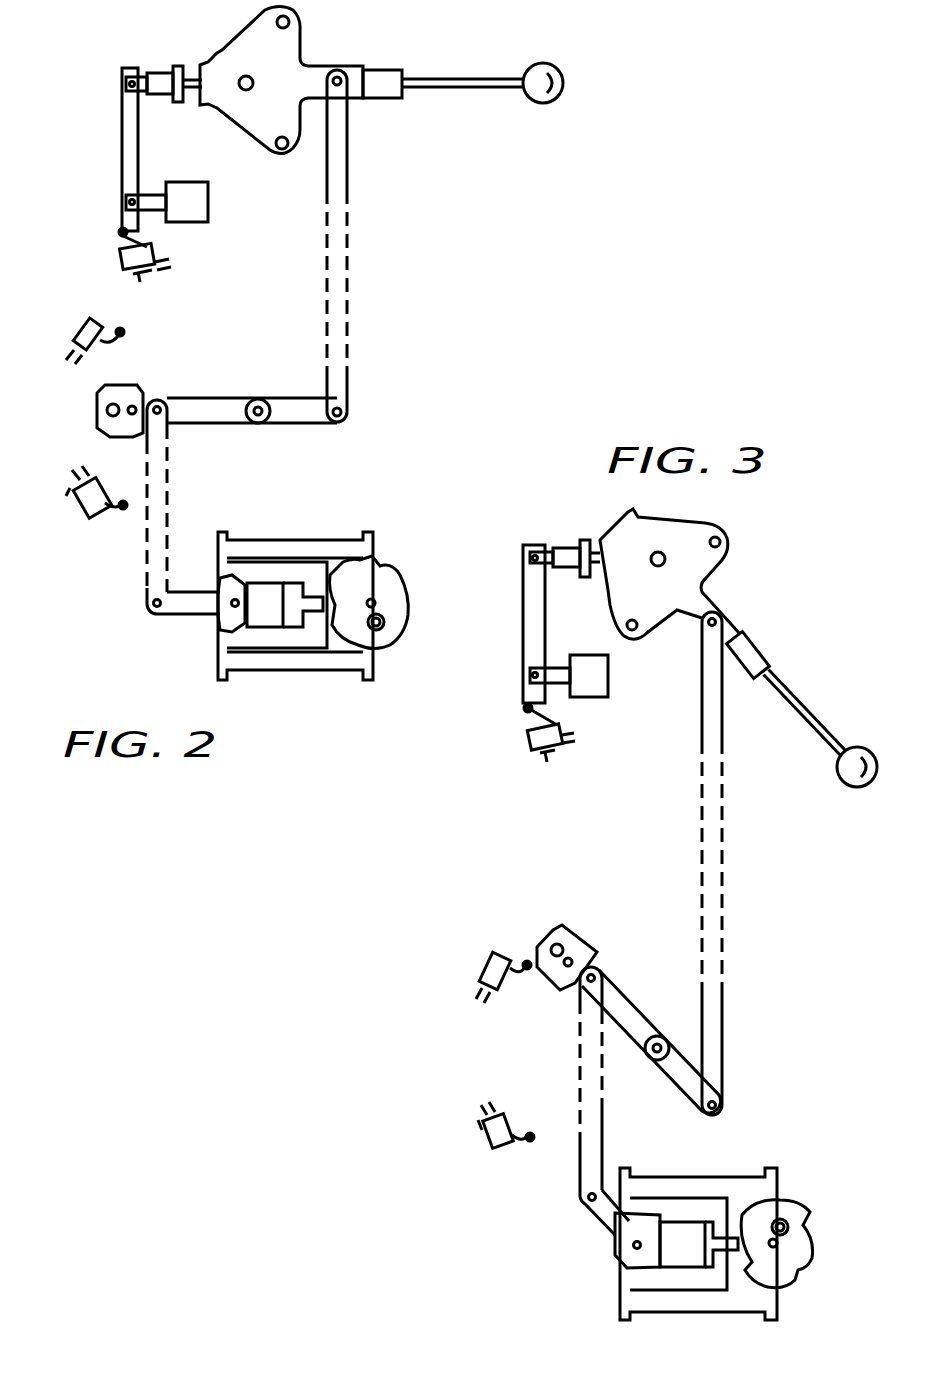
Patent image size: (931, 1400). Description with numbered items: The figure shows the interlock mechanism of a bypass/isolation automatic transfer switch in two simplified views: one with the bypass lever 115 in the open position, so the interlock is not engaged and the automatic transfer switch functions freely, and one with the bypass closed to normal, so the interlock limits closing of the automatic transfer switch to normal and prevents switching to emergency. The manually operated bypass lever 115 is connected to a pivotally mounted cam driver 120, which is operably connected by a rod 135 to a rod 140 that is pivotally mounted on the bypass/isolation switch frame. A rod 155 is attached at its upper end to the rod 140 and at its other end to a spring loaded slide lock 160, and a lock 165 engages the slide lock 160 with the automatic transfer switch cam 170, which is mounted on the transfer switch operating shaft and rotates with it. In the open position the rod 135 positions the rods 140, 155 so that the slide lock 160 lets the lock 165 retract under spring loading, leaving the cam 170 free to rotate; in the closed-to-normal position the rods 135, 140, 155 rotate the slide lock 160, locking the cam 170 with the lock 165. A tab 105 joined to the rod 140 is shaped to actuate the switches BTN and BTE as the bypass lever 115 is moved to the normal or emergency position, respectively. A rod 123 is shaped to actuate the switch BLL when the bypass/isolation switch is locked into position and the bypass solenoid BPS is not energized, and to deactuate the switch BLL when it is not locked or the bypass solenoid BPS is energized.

In FIG. 2, the tab 105 is at (100, 397).
In FIG. 3, the tab 105 is at (570, 933).
In FIG. 2, the bypass lever 115 is at (565, 32).
In FIG. 3, the bypass lever 115 is at (839, 774).
In FIG. 2, the cam driver 120 is at (222, 50).
In FIG. 3, the cam driver 120 is at (680, 533).
In FIG. 2, the rod 123 is at (122, 112).
In FIG. 3, the rod 123 is at (545, 594).
In FIG. 2, the rod 135 is at (349, 168).
In FIG. 3, the rod 135 is at (724, 803).
In FIG. 2, the rod 140 is at (207, 398).
In FIG. 3, the rod 140 is at (688, 1072).
In FIG. 2, the rod 155 is at (167, 451).
In FIG. 3, the rod 155 is at (603, 1123).
In FIG. 2, the slide lock 160 is at (188, 613).
In FIG. 3, the slide lock 160 is at (607, 1222).
In FIG. 2, the lock 165 is at (266, 613).
In FIG. 3, the lock 165 is at (688, 1253).
In FIG. 2, the automatic transfer switch cam 170 is at (386, 638).
In FIG. 3, the automatic transfer switch cam 170 is at (801, 1238).
In FIG. 2, the bypass solenoid BPS is at (211, 205).
In FIG. 3, the bypass solenoid BPS is at (608, 674).
In FIG. 2, the switch BLL is at (112, 256).
In FIG. 3, the switch BLL is at (530, 748).
In FIG. 2, the switch BTE is at (80, 320).
In FIG. 3, the switch BTE is at (492, 955).
In FIG. 2, the switch BTN is at (80, 514).
In FIG. 3, the switch BTN is at (490, 1147).